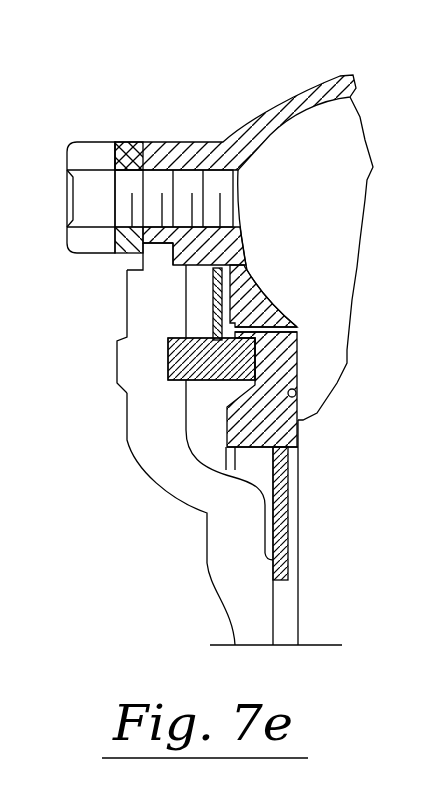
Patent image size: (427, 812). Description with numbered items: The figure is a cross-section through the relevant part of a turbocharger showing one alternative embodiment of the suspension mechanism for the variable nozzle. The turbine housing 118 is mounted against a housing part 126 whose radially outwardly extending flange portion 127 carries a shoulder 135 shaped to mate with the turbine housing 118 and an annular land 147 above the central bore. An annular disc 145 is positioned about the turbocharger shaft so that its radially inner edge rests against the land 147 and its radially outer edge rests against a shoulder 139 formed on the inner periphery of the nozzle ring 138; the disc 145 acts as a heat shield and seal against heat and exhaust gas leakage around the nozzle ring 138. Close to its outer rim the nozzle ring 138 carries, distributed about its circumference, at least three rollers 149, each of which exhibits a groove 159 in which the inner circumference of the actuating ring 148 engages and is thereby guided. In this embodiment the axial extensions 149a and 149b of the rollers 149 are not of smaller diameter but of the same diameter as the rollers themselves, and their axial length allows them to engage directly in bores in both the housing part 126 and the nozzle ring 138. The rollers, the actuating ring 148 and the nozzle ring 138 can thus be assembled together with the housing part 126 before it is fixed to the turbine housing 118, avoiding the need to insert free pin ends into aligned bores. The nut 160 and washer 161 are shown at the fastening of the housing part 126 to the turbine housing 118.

The turbine housing 118 is at (295, 85).
The nut 160 is at (90, 153).
The washer 161 is at (126, 150).
The shoulder 135 is at (147, 260).
The flange portion 127 is at (137, 302).
The housing part 126 is at (127, 377).
The actuating ring 148 is at (226, 281).
The axial extension 149a is at (168, 355).
The axial extension 149b is at (299, 330).
The roller 149 is at (168, 380).
The nozzle ring 138 is at (297, 393).
The shoulder 139 is at (298, 443).
The groove 159 is at (217, 381).
The annular disc 145 is at (288, 548).
The annular land 147 is at (263, 592).